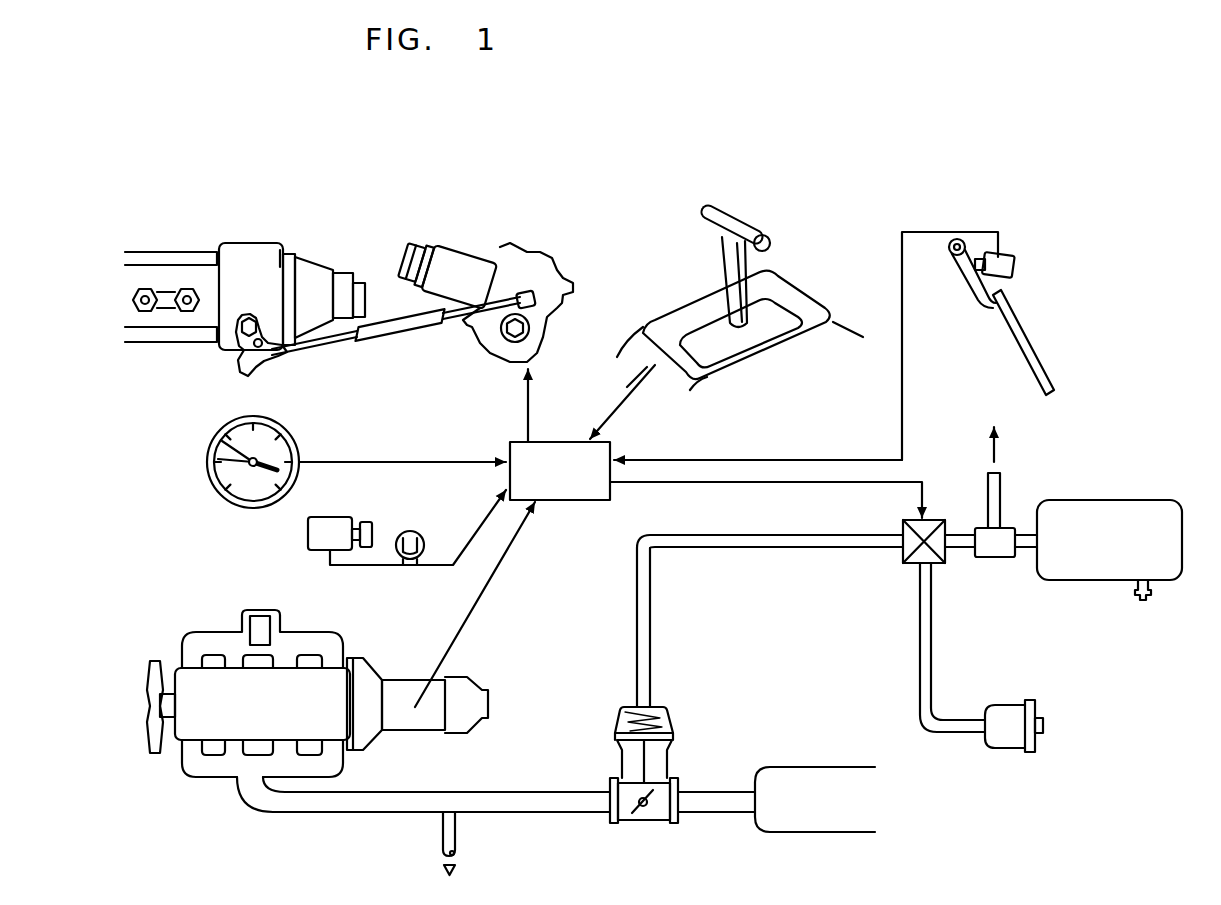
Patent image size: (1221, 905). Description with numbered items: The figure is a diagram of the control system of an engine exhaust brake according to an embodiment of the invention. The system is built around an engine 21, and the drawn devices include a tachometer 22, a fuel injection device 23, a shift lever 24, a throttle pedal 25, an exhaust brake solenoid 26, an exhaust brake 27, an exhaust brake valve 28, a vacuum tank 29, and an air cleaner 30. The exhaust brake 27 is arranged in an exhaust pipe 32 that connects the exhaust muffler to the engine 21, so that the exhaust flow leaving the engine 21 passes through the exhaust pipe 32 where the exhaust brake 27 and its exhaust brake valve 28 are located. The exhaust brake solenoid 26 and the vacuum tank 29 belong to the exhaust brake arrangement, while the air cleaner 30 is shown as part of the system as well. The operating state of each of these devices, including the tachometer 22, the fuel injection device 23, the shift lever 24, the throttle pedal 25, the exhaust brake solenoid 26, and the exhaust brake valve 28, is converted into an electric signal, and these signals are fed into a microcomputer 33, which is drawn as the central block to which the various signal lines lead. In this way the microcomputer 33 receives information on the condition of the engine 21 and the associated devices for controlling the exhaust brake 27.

The engine 21 is at (203, 632).
The tachometer 22 is at (290, 422).
The fuel injection device 23 is at (553, 258).
The shift lever 24 is at (748, 225).
The throttle pedal 25 is at (1025, 338).
The exhaust brake solenoid 26 is at (902, 566).
The exhaust brake 27 is at (678, 760).
The exhaust brake valve 28 is at (642, 822).
The vacuum tank 29 is at (1105, 500).
The air cleaner 30 is at (1005, 750).
The exhaust pipe 32 is at (518, 787).
The microcomputer 33 is at (557, 500).